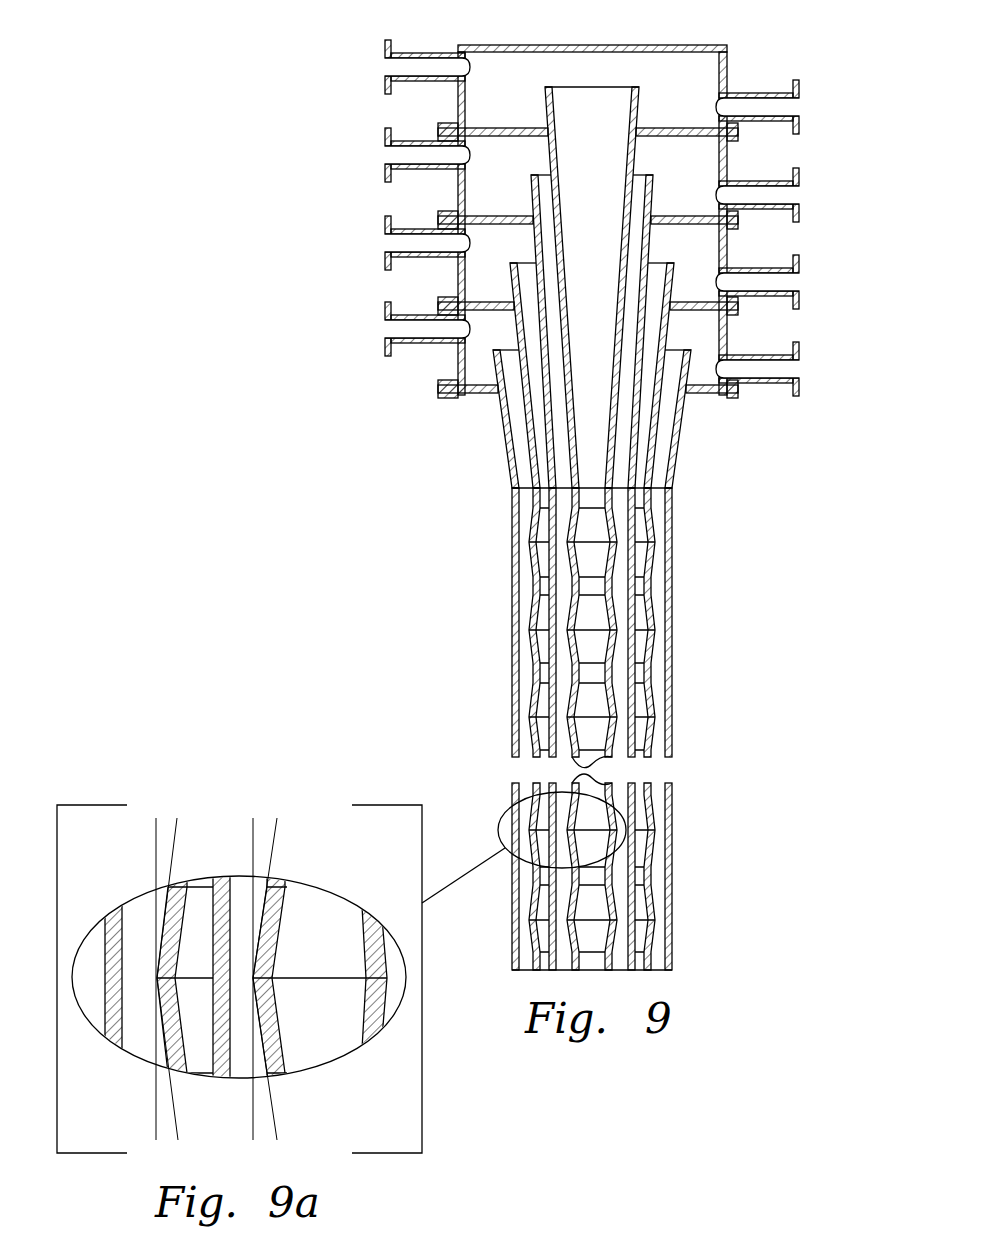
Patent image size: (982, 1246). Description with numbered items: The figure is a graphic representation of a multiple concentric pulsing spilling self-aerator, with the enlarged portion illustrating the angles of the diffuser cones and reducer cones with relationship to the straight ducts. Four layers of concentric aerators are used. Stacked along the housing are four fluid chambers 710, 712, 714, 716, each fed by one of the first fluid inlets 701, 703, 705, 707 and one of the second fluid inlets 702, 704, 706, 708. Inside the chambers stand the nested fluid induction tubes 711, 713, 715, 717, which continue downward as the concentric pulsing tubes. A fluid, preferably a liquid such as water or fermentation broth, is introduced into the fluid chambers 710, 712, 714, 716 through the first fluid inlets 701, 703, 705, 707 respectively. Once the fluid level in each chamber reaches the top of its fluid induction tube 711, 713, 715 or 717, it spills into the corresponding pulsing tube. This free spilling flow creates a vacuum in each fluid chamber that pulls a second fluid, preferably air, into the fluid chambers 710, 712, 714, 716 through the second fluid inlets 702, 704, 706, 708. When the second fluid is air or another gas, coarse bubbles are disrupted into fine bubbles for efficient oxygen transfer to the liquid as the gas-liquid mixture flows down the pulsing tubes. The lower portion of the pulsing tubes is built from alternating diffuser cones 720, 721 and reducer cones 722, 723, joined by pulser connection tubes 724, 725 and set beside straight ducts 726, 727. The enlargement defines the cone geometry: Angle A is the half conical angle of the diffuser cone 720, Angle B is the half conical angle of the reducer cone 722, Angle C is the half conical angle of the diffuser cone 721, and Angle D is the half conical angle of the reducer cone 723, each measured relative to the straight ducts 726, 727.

In FIG. 9, the first fluid inlet 701 is at (799, 107).
In FIG. 9, the second fluid inlet 702 is at (385, 67).
In FIG. 9, the first fluid inlet 703 is at (799, 195).
In FIG. 9, the second fluid inlet 704 is at (385, 156).
In FIG. 9, the first fluid inlet 705 is at (799, 282).
In FIG. 9, the second fluid inlet 706 is at (385, 243).
In FIG. 9, the first fluid inlet 707 is at (799, 369).
In FIG. 9, the second fluid inlet 708 is at (385, 330).
In FIG. 9, the fluid chamber 710 is at (727, 63).
In FIG. 9, the fluid induction tube 711 is at (572, 450).
In FIG. 9, the fluid chamber 712 is at (457, 202).
In FIG. 9, the fluid induction tube 713 is at (632, 448).
In FIG. 9, the fluid chamber 714 is at (727, 240).
In FIG. 9, the fluid induction tube 715 is at (527, 425).
In FIG. 9, the fluid chamber 716 is at (457, 378).
In FIG. 9, the fluid induction tube 717 is at (675, 428).
In FIG. 9, the diffuser cone 720 is at (617, 612).
In FIG. 9, the diffuser cone 721 is at (533, 523).
In FIG. 9, the reducer cone 722 is at (570, 650).
In FIG. 9, the reducer cone 723 is at (652, 558).
In FIG. 9, the pulser connection tube 724 is at (617, 672).
In FIG. 9, the pulser connection tube 725 is at (535, 585).
In FIG. 9, the straight duct 726 is at (535, 712).
In FIG. 9, the straight duct 727 is at (673, 745).
In FIG. 9A, the Angle A is at (223, 840).
In FIG. 9A, the Angle B is at (225, 1123).
In FIG. 9A, the Angle C is at (205, 828).
In FIG. 9A, the Angle D is at (202, 1108).